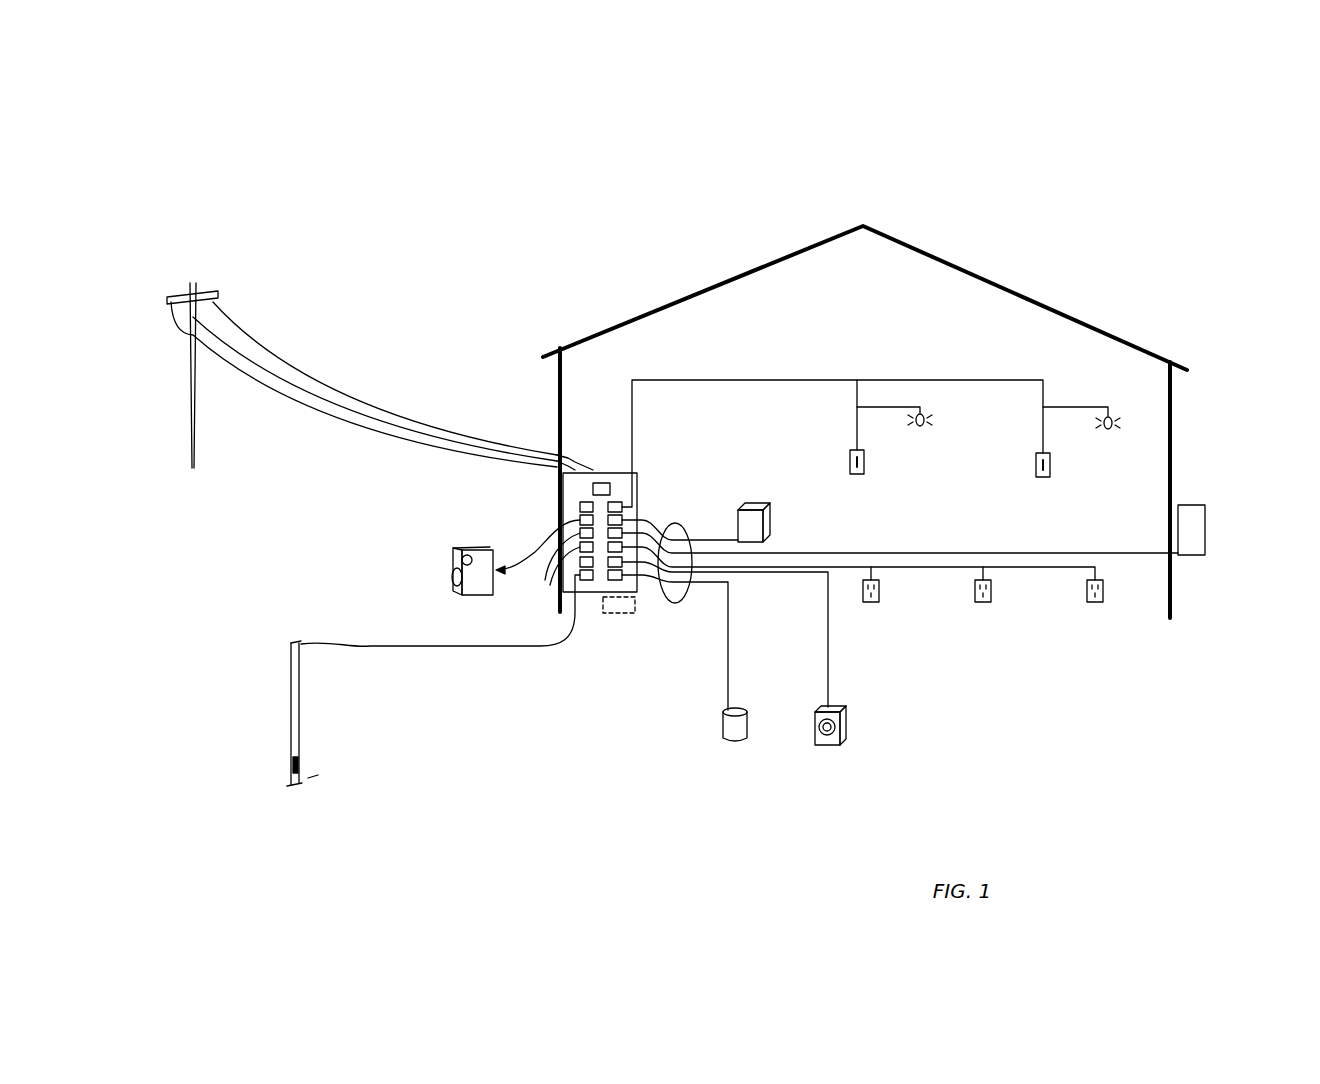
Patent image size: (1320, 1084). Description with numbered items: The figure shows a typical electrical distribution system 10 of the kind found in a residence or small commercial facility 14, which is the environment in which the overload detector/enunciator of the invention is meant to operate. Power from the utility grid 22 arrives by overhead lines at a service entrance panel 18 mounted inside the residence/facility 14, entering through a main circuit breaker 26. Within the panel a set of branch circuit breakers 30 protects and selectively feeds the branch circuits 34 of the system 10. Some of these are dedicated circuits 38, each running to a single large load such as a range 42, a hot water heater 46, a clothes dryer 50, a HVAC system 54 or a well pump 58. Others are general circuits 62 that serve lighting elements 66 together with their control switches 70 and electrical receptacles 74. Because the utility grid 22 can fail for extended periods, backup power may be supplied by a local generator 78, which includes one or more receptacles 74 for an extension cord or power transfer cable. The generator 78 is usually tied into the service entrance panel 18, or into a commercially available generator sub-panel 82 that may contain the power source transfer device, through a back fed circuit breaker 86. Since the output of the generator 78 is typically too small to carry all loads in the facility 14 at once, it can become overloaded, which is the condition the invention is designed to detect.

The electrical distribution system 10 is at (588, 202).
The residence/facility 14 is at (572, 342).
The service entrance panel 18 is at (612, 471).
The utility grid 22 is at (240, 312).
The main circuit breaker 26 is at (593, 489).
The branch circuit breakers 30 is at (580, 563).
The branch circuits 34 is at (672, 603).
The dedicated circuits 38 is at (710, 540).
The range 42 is at (765, 525).
The hot water heater 46 is at (727, 741).
The clothes dryer 50 is at (822, 746).
The HVAC system 54 is at (1192, 505).
The well pump 58 is at (292, 763).
The general circuits 62 is at (737, 380).
The lighting elements 66 is at (925, 414).
The control switches 70 is at (864, 462).
The electrical receptacles 74 is at (453, 562).
The generator 78 is at (460, 550).
The generator sub-panel 82 is at (620, 613).
The back fed circuit breaker 86 is at (580, 507).